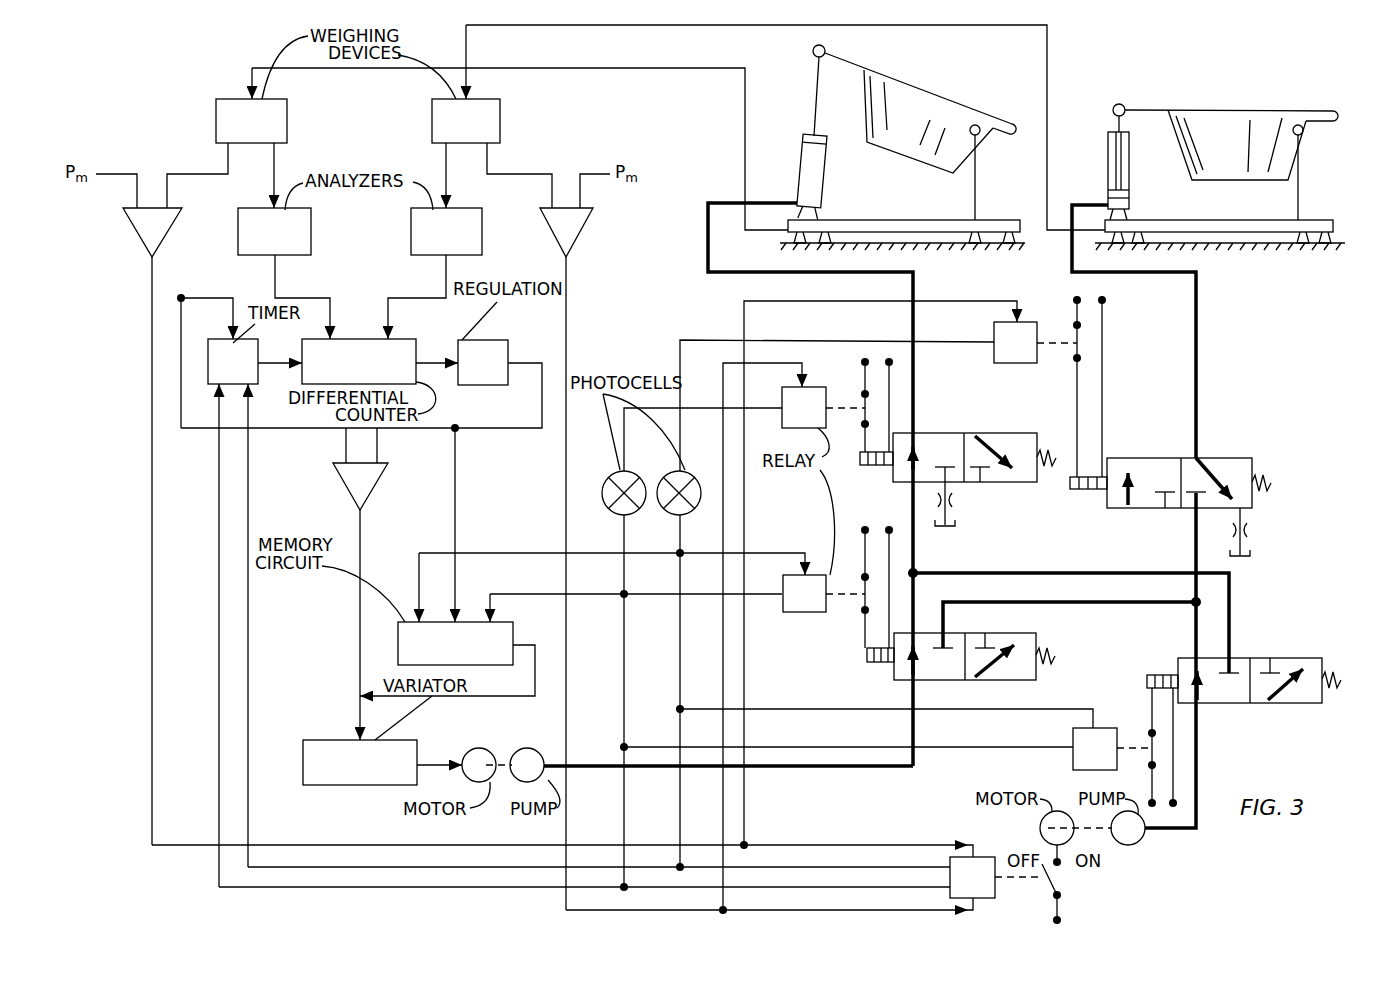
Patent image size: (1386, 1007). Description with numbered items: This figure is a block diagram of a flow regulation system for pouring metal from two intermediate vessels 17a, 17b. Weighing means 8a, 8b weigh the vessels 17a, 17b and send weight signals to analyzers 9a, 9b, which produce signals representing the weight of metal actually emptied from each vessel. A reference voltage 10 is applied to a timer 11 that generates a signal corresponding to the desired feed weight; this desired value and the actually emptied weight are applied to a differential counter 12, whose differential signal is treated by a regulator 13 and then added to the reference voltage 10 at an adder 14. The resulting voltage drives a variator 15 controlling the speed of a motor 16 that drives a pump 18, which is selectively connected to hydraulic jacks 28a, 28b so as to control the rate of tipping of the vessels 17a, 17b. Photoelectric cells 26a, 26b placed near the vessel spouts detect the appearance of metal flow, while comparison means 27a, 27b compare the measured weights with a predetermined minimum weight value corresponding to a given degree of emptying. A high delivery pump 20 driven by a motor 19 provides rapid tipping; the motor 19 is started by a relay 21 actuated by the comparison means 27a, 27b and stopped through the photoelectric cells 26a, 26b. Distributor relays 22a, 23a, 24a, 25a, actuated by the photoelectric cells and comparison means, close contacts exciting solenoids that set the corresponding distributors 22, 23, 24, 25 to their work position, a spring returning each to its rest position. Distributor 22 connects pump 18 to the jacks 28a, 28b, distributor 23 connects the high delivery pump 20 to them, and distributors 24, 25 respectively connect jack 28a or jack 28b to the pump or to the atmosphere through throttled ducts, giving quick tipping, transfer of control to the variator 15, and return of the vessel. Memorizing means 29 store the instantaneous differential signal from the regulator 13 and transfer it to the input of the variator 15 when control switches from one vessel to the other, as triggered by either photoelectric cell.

The weighing means 8a is at (226, 115).
The weighing means 8b is at (487, 118).
The analyzer 9a is at (256, 216).
The analyzer 9b is at (515, 193).
The reference voltage 10 is at (181, 298).
The timer 11 is at (227, 349).
The differential counter 12 is at (378, 352).
The regulator 13 is at (478, 345).
The adder 14 is at (355, 481).
The variator 15 is at (333, 748).
The motor 16 is at (495, 752).
The vessel 17a is at (905, 97).
The vessel 17b is at (1237, 118).
The pump 18 is at (540, 752).
The motor 19 is at (1040, 828).
The high delivery pump 20 is at (1140, 838).
The relay 21 is at (975, 887).
The distributor 22 is at (1002, 633).
The distributor relay 22a is at (812, 612).
The distributor 23 is at (1243, 657).
The distributor relay 23a is at (1085, 742).
The distributor 24 is at (978, 440).
The distributor relay 24a is at (818, 401).
The distributor 25 is at (1147, 467).
The distributor relay 25a is at (1028, 341).
The photoelectric cell 26a is at (677, 480).
The photoelectric cell 26b is at (612, 488).
The comparison means 27a is at (150, 250).
The comparison means 27b is at (572, 230).
The hydraulic jack 28a is at (813, 140).
The hydraulic jack 28b is at (1112, 140).
The memorizing means 29 is at (482, 633).